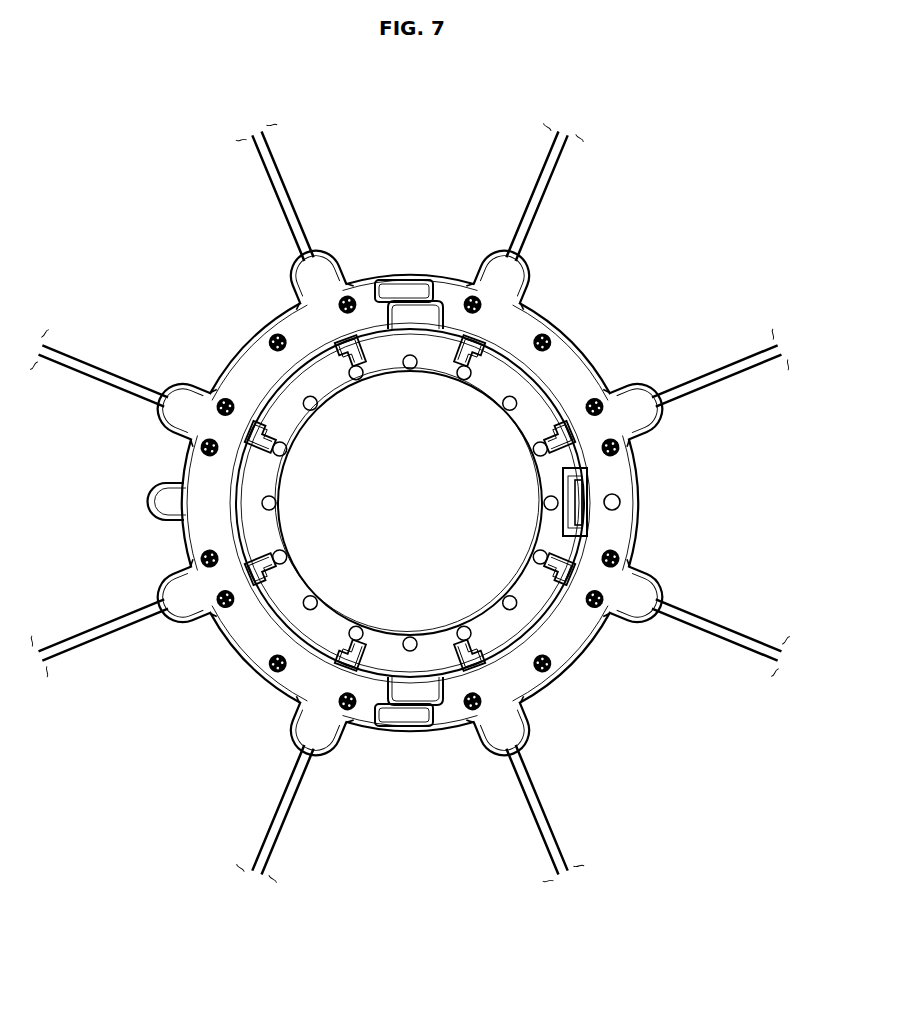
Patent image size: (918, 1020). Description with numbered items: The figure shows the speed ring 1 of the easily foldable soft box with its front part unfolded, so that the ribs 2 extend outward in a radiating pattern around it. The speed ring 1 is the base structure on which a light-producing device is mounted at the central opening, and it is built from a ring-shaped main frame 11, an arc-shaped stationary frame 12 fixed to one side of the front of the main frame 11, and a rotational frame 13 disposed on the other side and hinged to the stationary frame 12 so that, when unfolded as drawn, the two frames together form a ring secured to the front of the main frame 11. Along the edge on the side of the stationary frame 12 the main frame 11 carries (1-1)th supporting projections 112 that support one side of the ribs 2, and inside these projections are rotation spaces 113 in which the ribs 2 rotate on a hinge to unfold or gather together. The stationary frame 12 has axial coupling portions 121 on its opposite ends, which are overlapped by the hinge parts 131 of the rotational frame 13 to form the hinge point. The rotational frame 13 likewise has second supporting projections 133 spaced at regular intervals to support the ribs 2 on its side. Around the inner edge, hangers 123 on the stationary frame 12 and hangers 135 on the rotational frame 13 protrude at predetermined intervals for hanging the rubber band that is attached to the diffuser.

The speed ring 1 is at (243, 328).
The ribs 2 is at (280, 197).
The main frame 11 is at (503, 367).
The stationary frame 12 is at (577, 370).
The rotational frame 13 is at (205, 465).
The (1-1)th supporting projections 112 is at (510, 258).
The rotation spaces 113 is at (540, 740).
The axial coupling portions 121 is at (403, 310).
The hangers 123 is at (463, 370).
The hinge parts 131 is at (421, 282).
The second supporting projections 133 is at (325, 258).
The hangers 135 is at (305, 300).